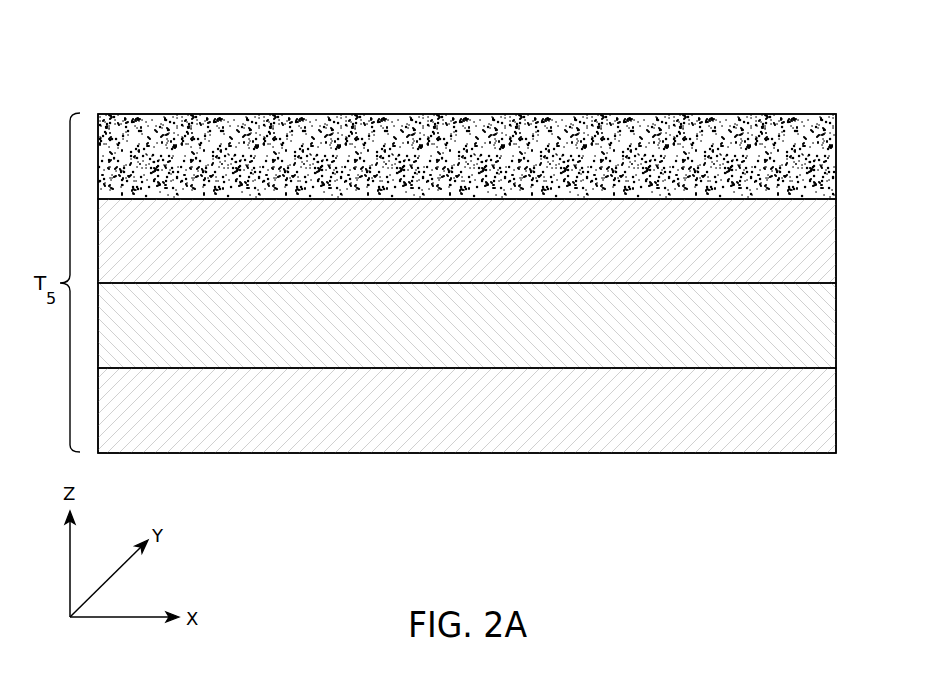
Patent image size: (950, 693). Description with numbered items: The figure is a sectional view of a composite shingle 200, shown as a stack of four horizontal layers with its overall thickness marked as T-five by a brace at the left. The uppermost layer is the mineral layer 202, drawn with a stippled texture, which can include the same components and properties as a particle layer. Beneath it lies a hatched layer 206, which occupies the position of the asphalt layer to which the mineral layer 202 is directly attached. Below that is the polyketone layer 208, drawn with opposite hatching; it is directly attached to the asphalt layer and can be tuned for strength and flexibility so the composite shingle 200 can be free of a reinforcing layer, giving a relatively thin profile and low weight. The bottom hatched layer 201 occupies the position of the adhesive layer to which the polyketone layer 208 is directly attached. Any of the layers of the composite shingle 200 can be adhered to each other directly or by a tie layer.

The composite shingle 200 is at (797, 58).
The mineral layer 202 is at (836, 159).
The second layer 206 is at (836, 241).
The polyketone layer 208 is at (836, 325).
The substrate layer 201 is at (836, 409).